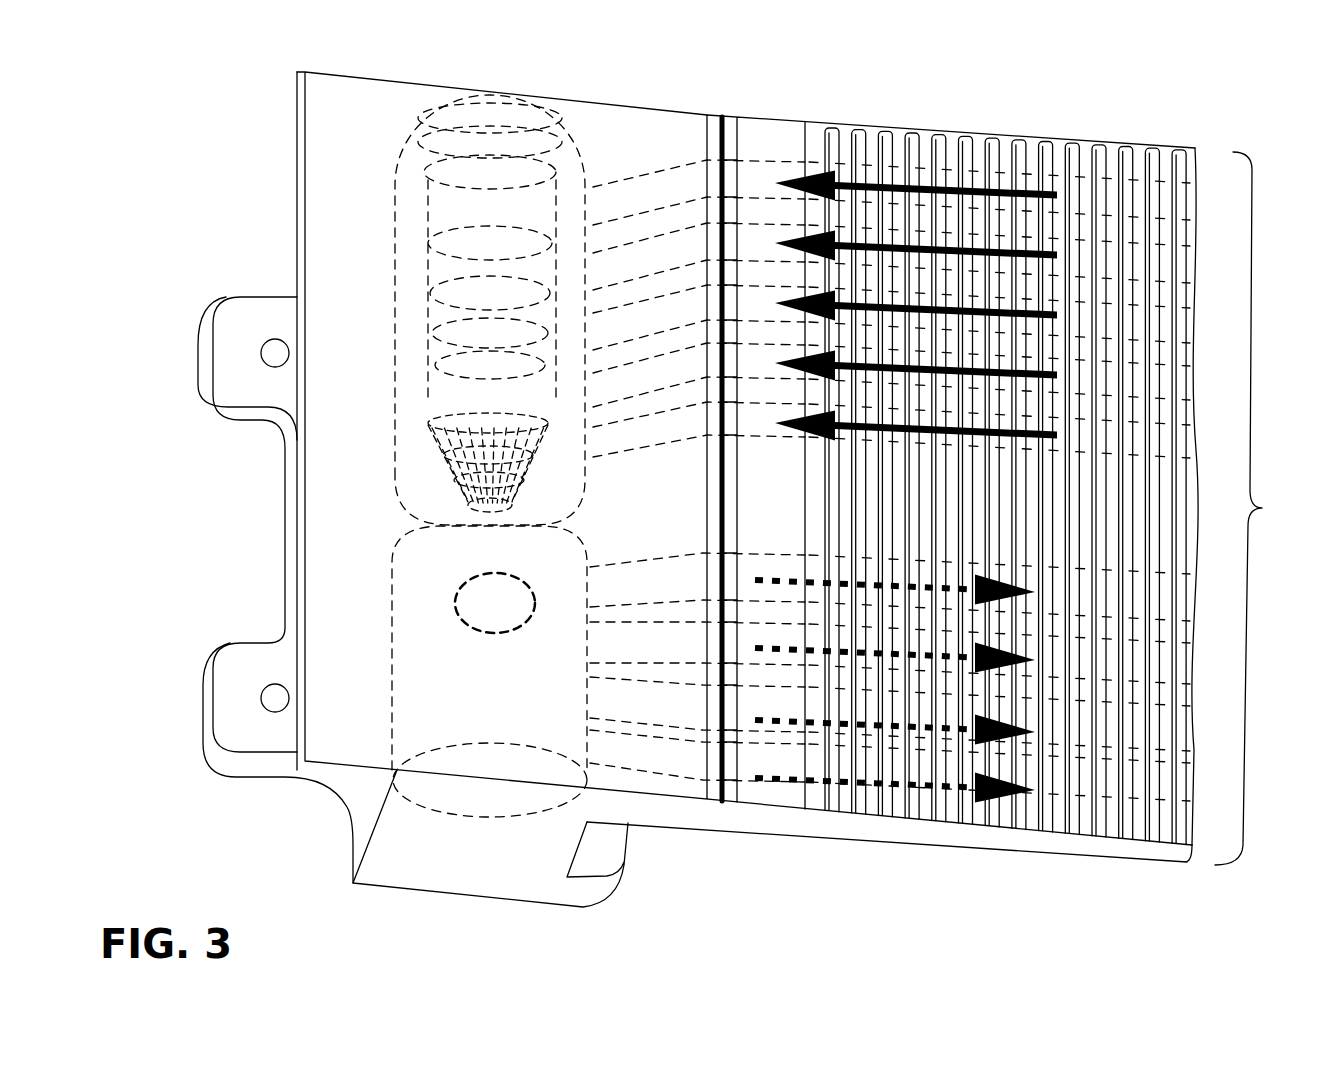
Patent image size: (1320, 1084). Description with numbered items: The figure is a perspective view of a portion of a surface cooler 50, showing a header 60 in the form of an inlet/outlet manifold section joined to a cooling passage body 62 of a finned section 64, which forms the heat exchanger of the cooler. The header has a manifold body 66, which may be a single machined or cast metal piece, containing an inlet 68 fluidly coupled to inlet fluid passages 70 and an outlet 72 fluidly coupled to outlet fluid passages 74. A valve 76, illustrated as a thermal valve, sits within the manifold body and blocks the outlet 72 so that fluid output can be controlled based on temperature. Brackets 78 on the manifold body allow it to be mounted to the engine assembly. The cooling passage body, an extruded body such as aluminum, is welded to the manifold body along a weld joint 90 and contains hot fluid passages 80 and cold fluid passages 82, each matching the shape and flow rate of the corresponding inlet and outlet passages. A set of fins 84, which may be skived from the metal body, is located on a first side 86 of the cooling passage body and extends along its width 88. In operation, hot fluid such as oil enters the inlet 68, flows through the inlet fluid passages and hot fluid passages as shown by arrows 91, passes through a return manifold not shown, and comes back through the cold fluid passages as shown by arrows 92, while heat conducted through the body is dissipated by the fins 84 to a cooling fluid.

The surface cooler 50 is at (425, 70).
The header 60 is at (280, 75).
The cooling passage body 62 is at (961, 128).
The finned section 64 is at (851, 112).
The manifold body 66 is at (435, 900).
The inlet 68 is at (455, 600).
The inlet fluid passages 70 is at (677, 645).
The outlet 72 is at (470, 398).
The outlet fluid passages 74 is at (690, 192).
The valve 76 is at (430, 446).
The brackets 78 is at (224, 301).
The hot fluid passages 80 is at (948, 762).
The cold fluid passages 82 is at (1077, 138).
The fins 84 is at (1097, 772).
The first side 86 is at (773, 145).
The width 88 is at (1260, 508).
The weld joint 90 is at (722, 715).
The arrows 91 is at (840, 713).
The arrows 92 is at (904, 185).